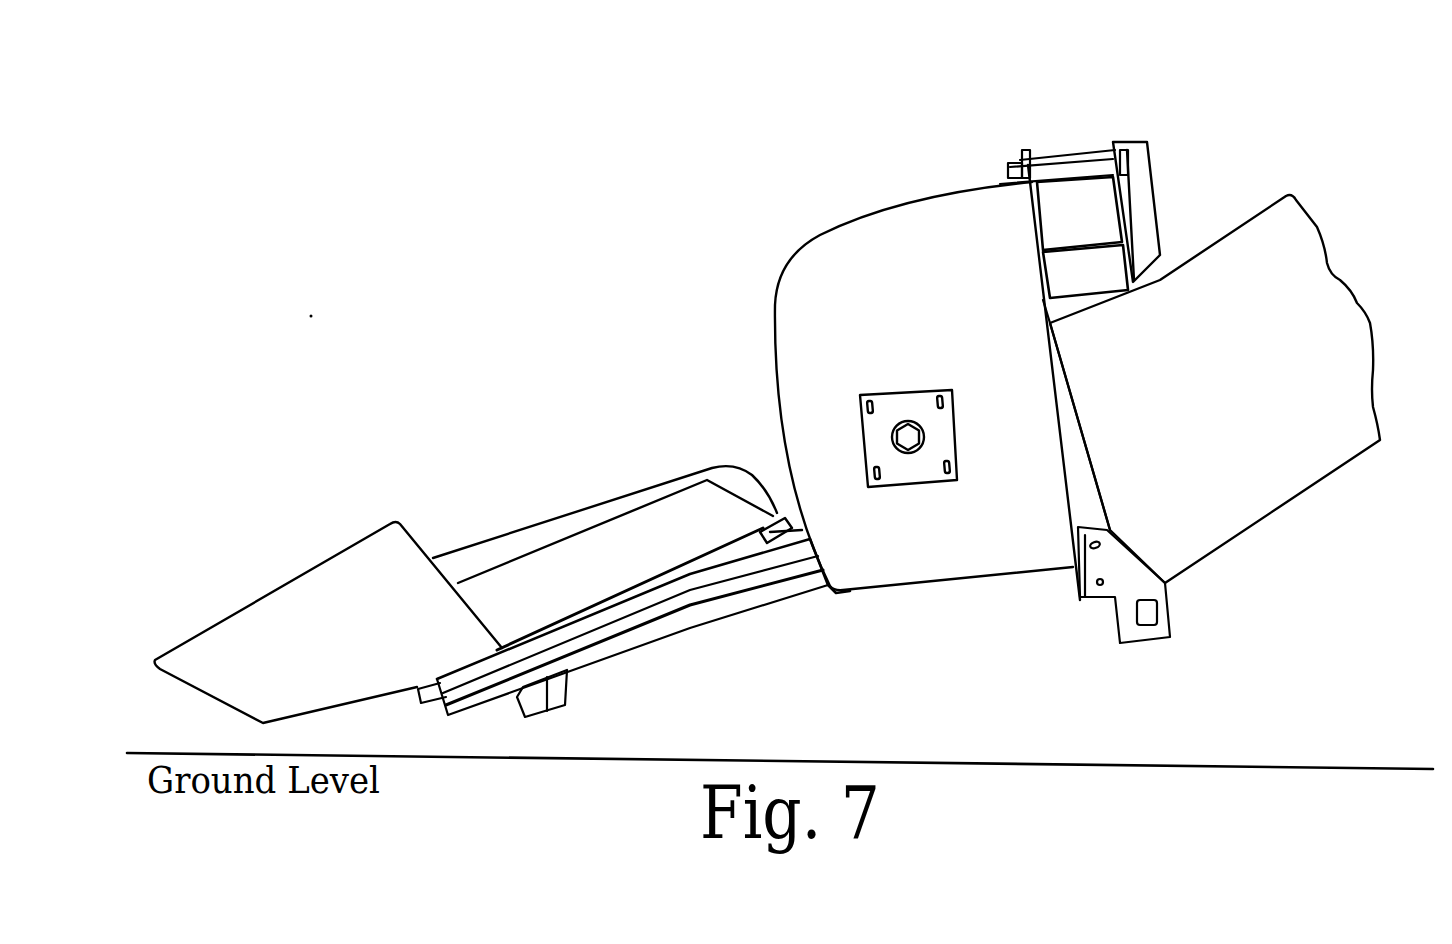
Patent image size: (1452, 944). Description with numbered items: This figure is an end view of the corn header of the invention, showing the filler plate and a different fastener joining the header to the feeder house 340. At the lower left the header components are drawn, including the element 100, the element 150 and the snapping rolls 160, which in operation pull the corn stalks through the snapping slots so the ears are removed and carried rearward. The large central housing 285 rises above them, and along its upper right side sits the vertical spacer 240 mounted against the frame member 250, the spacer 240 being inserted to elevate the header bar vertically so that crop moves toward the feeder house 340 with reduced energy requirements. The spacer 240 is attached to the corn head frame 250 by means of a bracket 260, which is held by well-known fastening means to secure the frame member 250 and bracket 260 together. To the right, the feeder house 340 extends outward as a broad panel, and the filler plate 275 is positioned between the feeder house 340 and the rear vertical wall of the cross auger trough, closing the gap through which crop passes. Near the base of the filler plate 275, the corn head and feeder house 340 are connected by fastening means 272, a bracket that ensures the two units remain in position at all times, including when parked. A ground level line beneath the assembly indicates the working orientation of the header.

The blade 100 is at (315, 653).
The hood 150 is at (671, 530).
The snapping rolls 160 is at (735, 592).
The body housing 285 is at (882, 277).
The vertical spacer 240 is at (1052, 265).
The frame member 250 is at (1097, 210).
The bracket 260 is at (1140, 185).
The fastening means 272 is at (1130, 580).
The filler plate 275 is at (1078, 477).
The feeder house 340 is at (1280, 510).